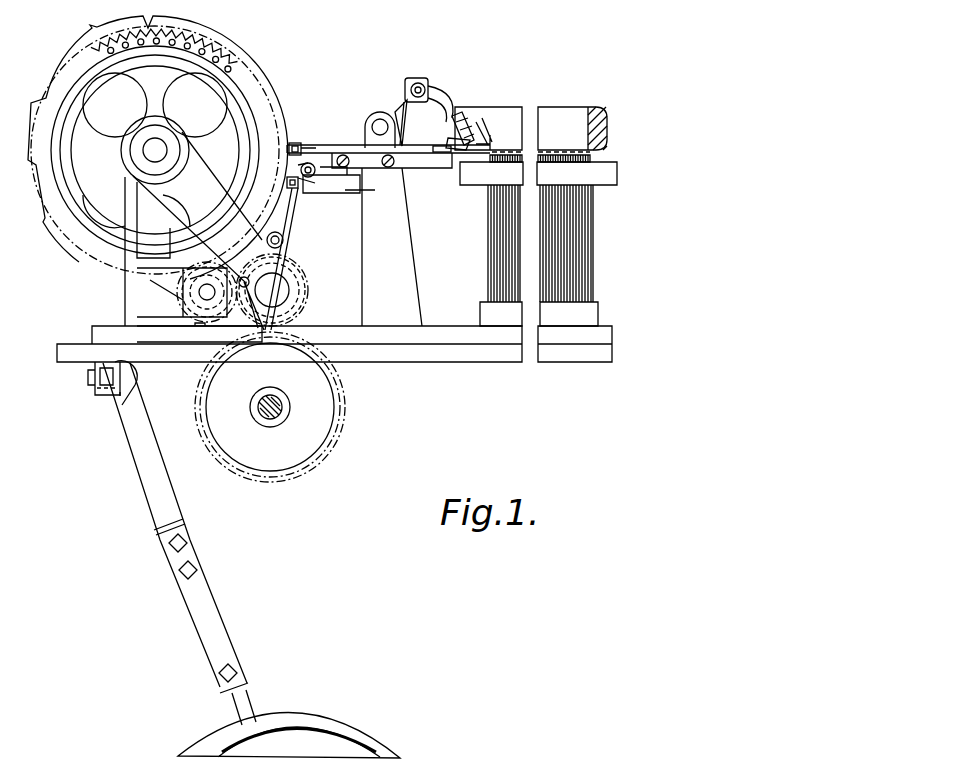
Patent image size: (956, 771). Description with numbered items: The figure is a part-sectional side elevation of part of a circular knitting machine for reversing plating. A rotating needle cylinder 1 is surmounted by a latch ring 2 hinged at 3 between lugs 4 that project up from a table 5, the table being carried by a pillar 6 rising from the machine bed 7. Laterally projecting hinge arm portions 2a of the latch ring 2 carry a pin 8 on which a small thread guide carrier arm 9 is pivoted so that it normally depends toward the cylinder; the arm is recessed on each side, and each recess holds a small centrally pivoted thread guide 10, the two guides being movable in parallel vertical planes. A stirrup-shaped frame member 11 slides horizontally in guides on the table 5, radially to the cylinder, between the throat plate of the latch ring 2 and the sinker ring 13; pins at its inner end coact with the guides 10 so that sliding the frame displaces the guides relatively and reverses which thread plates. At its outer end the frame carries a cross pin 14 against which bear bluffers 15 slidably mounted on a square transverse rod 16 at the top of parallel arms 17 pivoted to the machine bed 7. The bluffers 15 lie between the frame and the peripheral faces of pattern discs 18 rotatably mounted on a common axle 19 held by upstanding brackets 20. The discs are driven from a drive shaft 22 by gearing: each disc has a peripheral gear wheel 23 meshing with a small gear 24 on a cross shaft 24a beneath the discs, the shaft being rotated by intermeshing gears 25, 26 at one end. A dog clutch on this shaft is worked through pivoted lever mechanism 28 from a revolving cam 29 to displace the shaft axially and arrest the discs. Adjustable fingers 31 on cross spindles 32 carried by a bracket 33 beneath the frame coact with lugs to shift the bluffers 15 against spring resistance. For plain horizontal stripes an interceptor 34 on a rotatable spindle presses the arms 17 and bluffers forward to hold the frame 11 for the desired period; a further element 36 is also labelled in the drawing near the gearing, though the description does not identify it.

The needle cylinder 1 is at (592, 157).
The latch ring 2 is at (603, 110).
The hinge arm portions 2a is at (462, 116).
The hinge 3 is at (380, 118).
The lugs 4 is at (370, 118).
The table 5 is at (440, 170).
The pillar 6 is at (392, 247).
The machine bed 7 is at (402, 352).
The pin 8 is at (418, 82).
The thread guide carrier arm 9 is at (433, 92).
The thread guide 10 is at (480, 118).
The frame member 11 is at (320, 146).
The sinker ring 13 is at (538, 175).
The cross pin 14 is at (309, 162).
The bluffers 15 is at (301, 140).
The transverse rod 16 is at (296, 142).
The parallel arms 17 is at (287, 236).
The pattern discs 18 is at (253, 62).
The axle 19 is at (147, 150).
The brackets 20 is at (130, 206).
The drive shaft 22 is at (261, 413).
The peripheral gear wheel 23 is at (98, 46).
The gear 24 is at (183, 290).
The cross shaft 24a is at (206, 300).
The gear 25 is at (303, 289).
The gear 26 is at (345, 420).
The lever mechanism 28 is at (128, 420).
The revolving cam 29 is at (288, 717).
The adjustable fingers 31 is at (288, 170).
The cross spindles 32 is at (289, 205).
The bracket 33 is at (375, 190).
The interceptor 34 is at (307, 298).
The pulley flange 36 is at (290, 326).